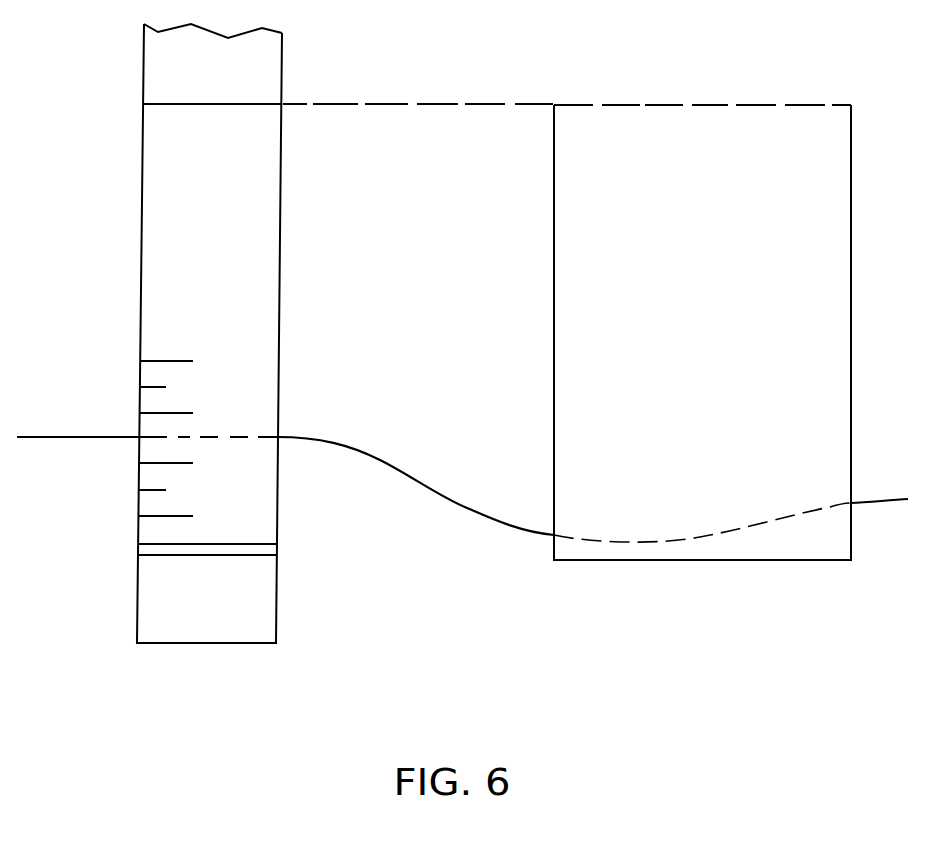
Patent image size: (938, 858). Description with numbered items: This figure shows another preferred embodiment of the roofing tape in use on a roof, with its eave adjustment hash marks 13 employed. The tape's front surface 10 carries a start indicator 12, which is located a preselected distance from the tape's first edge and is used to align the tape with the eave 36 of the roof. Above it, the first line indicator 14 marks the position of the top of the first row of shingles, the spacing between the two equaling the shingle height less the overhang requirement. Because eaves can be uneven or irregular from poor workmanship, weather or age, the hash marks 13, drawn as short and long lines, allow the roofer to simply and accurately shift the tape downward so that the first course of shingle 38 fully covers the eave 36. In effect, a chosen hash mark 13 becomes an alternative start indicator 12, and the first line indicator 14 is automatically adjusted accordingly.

The front surface 10 is at (183, 644).
The start indicator 12 is at (146, 548).
The eave adjustment hash marks 13 is at (155, 385).
The first line indicator 14 is at (188, 104).
The eave 36 is at (465, 508).
The first course of shingle 38 is at (780, 561).